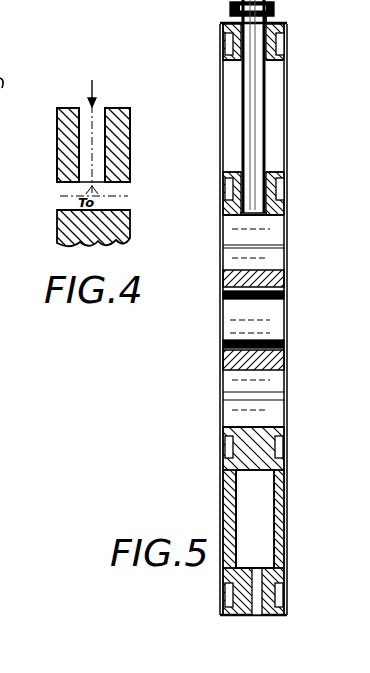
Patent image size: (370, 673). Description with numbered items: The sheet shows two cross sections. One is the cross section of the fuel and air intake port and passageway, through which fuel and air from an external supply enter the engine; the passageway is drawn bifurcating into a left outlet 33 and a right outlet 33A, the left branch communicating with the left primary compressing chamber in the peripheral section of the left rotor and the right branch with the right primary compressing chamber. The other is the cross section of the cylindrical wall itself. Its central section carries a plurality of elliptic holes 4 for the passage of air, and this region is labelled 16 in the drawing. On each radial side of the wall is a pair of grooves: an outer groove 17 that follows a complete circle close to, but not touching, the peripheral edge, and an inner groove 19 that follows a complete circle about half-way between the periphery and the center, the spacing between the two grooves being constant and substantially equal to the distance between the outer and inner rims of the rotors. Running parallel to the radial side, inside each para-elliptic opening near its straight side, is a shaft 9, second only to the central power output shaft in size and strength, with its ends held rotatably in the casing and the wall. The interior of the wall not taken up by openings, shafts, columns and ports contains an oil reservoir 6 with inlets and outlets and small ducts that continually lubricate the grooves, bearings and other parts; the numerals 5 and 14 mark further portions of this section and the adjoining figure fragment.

In FIG. 5, the elliptic holes 4 is at (246, 233).
In FIG. 5, the outlet port 5 is at (254, 616).
In FIG. 5, the oil reservoir 6 is at (250, 505).
In FIG. 5, the shaft 9 is at (248, 97).
In FIG. 4, the valve body 14 is at (0, 318).
In FIG. 5, the piston 16 is at (230, 320).
In FIG. 4, the outer groove 17 is at (0, 445).
In FIG. 5, the outer groove 17 is at (226, 41).
In FIG. 5, the inner groove 19 is at (226, 190).
In FIG. 4, the inlet passage 33 is at (57, 194).
In FIG. 4, the outlet passage 33A is at (130, 196).